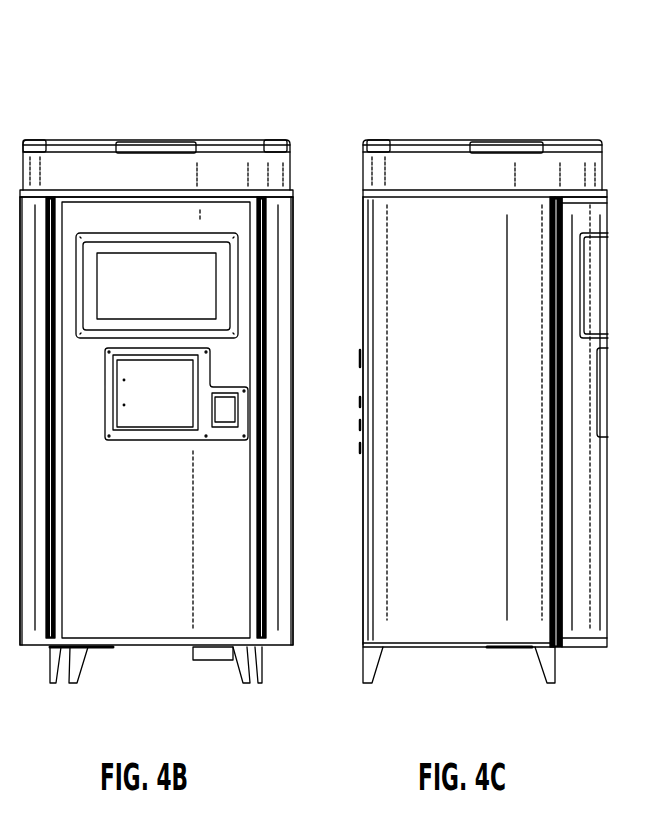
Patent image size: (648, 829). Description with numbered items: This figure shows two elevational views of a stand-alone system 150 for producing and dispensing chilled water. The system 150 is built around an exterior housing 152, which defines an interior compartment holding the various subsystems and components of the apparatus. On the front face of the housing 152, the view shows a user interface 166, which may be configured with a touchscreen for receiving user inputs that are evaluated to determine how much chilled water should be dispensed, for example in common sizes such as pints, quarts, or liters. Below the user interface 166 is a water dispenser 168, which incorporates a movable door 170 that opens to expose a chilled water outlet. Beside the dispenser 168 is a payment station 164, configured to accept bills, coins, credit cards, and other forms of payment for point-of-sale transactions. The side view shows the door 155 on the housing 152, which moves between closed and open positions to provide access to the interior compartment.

In FIG. 4B, the system 150 is at (190, 111).
In FIG. 4C, the system 150 is at (494, 112).
In FIG. 4B, the exterior housing 152 is at (293, 518).
In FIG. 4C, the exterior housing 152 is at (383, 322).
In FIG. 4C, the door 155 is at (590, 493).
In FIG. 4B, the payment station 164 is at (232, 414).
In FIG. 4B, the user interface 166 is at (190, 292).
In FIG. 4B, the water dispenser 168 is at (118, 444).
In FIG. 4B, the movable door 170 is at (160, 416).